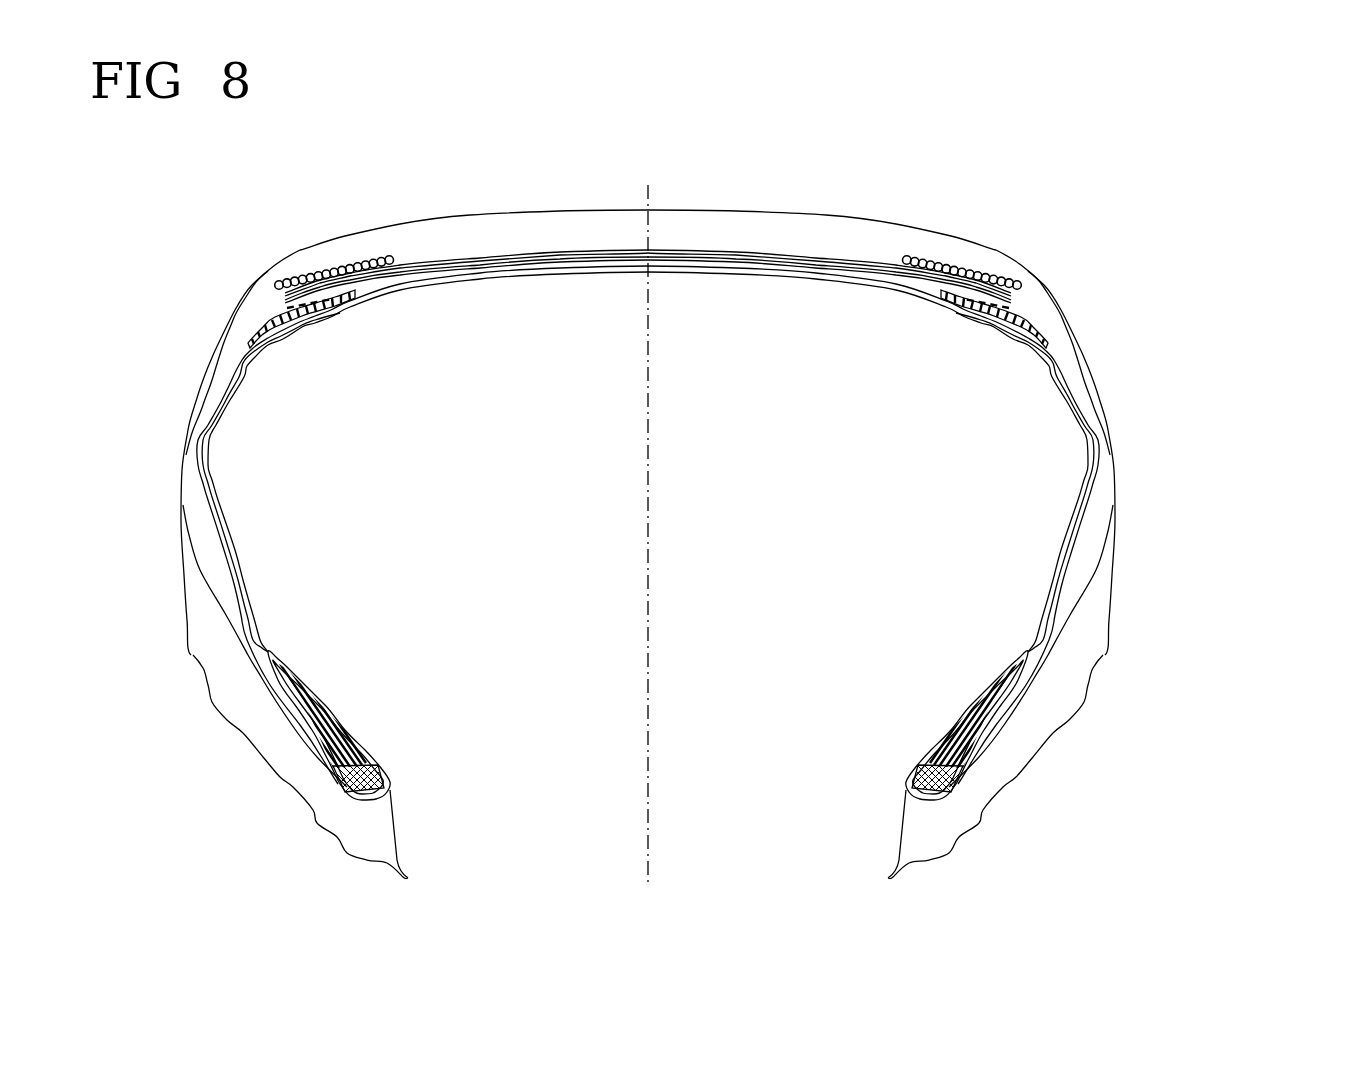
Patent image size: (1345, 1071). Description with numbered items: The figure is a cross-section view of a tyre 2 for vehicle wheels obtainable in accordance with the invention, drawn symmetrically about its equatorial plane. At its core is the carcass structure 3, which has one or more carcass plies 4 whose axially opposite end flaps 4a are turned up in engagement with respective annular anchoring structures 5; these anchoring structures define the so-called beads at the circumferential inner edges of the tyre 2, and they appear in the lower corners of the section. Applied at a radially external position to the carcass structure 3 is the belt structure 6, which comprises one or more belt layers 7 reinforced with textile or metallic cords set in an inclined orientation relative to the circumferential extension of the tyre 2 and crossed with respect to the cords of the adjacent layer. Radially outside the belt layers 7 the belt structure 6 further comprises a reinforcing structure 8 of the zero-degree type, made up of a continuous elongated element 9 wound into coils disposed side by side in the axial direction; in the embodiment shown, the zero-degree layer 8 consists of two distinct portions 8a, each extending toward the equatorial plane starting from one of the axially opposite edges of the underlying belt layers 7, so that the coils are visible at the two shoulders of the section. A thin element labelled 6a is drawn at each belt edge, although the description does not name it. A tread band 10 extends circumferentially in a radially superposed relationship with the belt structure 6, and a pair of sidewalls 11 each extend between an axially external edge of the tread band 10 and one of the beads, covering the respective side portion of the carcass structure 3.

The tyre 2 is at (1162, 243).
The carcass structure 3 is at (308, 666).
The carcass ply 4 is at (222, 553).
The end flap 4a is at (307, 728).
The annular anchoring structure 5 is at (360, 724).
The belt structure 6 is at (580, 236).
The belt cushion rubber 6a is at (273, 311).
The belt layer 7 is at (707, 250).
The reinforcing structure 8 is at (403, 265).
The portion 8a is at (325, 272).
The continuous elongated element 9 is at (1013, 288).
The tread band 10 is at (508, 222).
The sidewall 11 is at (1108, 442).